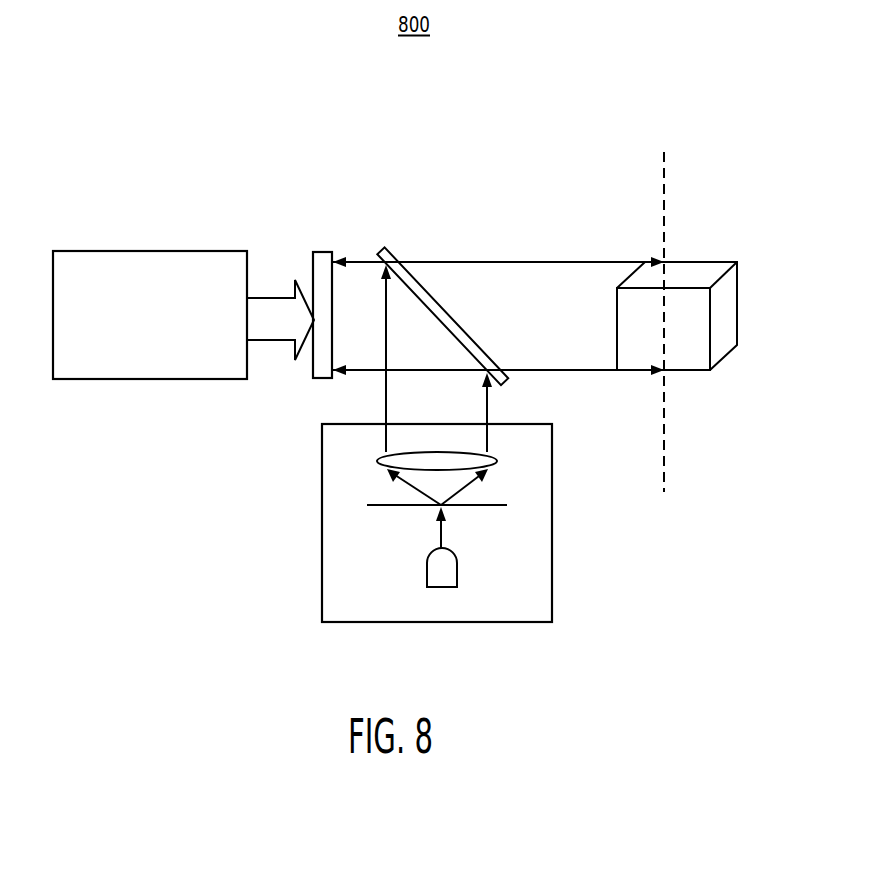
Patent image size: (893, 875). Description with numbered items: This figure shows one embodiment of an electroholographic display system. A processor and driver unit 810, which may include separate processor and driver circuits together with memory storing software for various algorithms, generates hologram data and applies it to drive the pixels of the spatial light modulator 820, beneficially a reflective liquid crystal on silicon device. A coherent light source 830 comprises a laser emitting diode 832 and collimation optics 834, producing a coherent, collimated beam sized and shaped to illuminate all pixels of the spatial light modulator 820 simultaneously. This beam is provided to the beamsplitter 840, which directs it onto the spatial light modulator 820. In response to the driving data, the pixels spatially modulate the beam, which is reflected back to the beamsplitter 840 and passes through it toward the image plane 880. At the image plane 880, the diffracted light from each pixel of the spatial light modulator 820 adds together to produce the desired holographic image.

The processor and driver unit 810 is at (158, 251).
The spatial light modulator 820 is at (317, 252).
The coherent light source 830 is at (322, 545).
The laser emitting diode 832 is at (458, 573).
The collimation optics 834 is at (377, 460).
The beamsplitter 840 is at (438, 300).
The image plane 880 is at (667, 167).